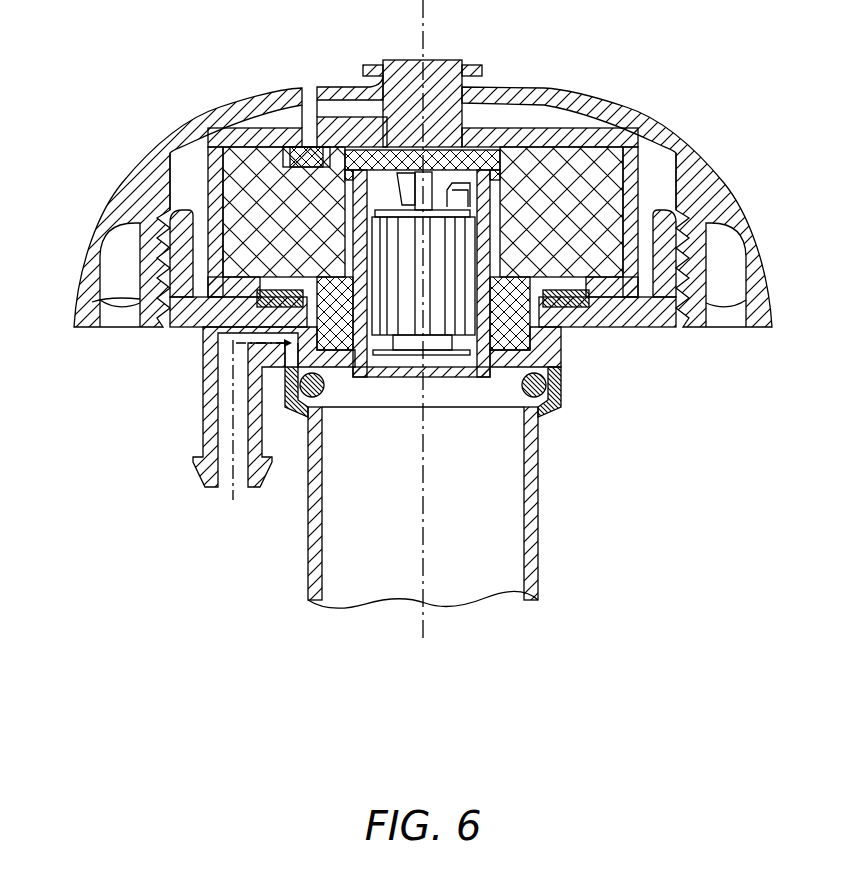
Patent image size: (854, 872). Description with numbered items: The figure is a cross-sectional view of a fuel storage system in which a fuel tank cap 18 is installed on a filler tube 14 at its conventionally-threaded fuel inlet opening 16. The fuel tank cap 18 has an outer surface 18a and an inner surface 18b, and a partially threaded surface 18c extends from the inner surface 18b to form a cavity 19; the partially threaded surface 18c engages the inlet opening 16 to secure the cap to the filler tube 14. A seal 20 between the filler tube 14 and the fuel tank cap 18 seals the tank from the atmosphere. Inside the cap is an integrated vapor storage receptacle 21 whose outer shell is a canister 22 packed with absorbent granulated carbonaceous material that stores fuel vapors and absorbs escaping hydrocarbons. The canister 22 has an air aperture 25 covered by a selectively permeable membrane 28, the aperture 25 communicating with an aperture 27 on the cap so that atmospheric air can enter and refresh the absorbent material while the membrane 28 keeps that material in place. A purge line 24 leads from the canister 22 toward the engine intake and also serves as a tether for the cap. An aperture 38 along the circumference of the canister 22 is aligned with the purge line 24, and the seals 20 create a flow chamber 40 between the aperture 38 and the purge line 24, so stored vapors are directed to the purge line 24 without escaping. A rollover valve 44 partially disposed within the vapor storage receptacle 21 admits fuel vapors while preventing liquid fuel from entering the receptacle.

The filler tube 14 is at (308, 568).
The fuel inlet opening 16 is at (676, 205).
The fuel tank cap 18 is at (780, 270).
The outer surface 18a is at (126, 188).
The inner surface 18b is at (107, 273).
The partially threaded surface 18c is at (92, 302).
The cavity 19 is at (195, 158).
The seal 20 is at (303, 398).
The vapor storage receptacle 21 is at (560, 252).
The canister 22 is at (597, 127).
The purge line 24 is at (203, 430).
The air aperture 25 is at (308, 128).
The aperture 27 is at (304, 92).
The membrane 28 is at (560, 340).
The aperture 38 is at (290, 356).
The flow chamber 40 is at (300, 342).
The rollover valve 44 is at (450, 388).